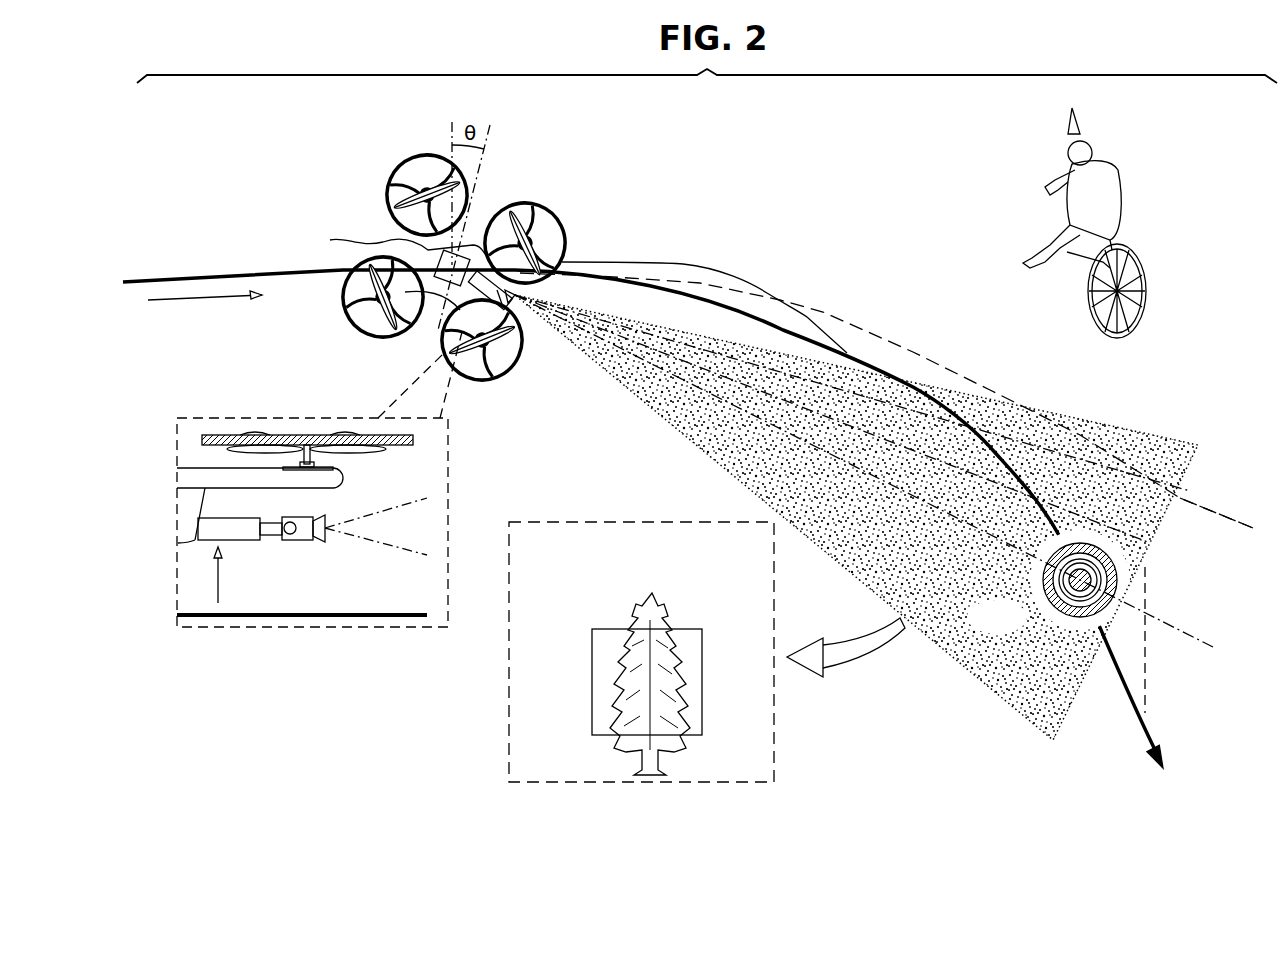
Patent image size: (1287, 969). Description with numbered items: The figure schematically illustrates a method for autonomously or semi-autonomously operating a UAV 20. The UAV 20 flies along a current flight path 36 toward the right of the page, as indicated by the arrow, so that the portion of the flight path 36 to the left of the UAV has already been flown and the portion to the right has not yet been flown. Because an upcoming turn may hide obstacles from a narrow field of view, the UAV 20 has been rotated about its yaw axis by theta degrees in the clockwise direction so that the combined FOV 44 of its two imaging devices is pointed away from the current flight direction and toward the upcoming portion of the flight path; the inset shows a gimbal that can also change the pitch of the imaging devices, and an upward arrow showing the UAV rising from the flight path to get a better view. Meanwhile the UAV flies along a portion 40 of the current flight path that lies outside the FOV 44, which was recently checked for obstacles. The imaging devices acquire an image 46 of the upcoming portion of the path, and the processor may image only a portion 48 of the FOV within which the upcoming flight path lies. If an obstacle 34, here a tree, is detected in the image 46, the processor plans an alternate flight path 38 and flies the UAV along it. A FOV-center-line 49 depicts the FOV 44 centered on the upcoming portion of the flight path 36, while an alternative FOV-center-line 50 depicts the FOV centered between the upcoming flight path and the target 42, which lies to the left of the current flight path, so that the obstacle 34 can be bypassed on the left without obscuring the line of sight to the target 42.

The UAV 20 is at (362, 250).
The obstacle 34 is at (1043, 588).
The flight path 36 is at (183, 280).
The alternate flight path 38 is at (823, 314).
The portion of the current flight path 40 is at (705, 268).
The target 42 is at (1065, 157).
The combined FOV 44 is at (1103, 425).
The image 46 is at (529, 521).
The portion of the FOV 48 is at (592, 657).
The FOV-center-line 49 is at (1165, 617).
The alternative FOV-center-line 50 is at (1205, 507).